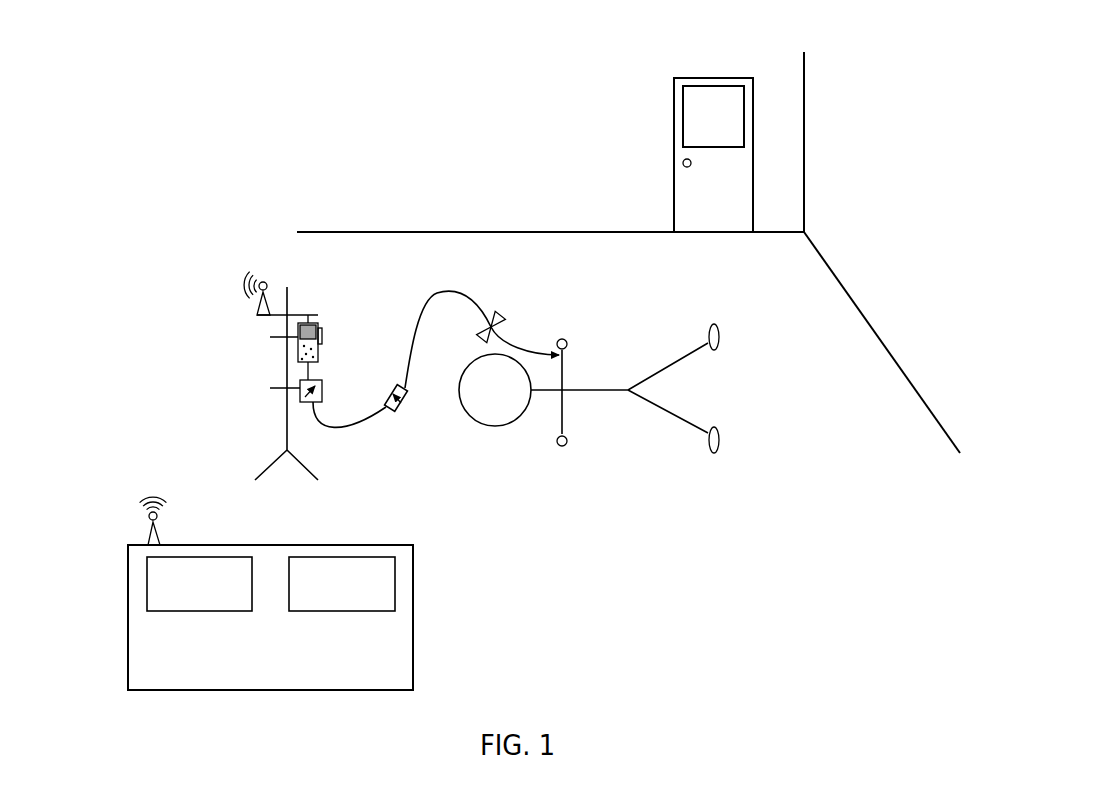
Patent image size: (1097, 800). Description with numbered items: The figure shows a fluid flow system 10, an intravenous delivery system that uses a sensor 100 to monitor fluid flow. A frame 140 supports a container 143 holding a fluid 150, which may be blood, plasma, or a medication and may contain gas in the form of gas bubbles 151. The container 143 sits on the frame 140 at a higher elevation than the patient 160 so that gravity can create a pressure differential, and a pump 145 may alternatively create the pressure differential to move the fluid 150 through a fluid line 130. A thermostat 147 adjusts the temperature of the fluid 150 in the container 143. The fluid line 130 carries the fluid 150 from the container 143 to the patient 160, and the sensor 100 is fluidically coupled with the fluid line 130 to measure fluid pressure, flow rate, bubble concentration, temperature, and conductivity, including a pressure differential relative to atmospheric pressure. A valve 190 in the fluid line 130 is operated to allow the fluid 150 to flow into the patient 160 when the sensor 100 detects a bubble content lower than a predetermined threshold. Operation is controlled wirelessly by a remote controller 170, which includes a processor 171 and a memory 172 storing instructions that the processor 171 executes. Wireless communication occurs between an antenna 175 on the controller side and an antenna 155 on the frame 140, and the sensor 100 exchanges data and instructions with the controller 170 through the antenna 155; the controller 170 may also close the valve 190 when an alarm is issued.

The fluid flow system 10 is at (137, 82).
The sensor 100 is at (402, 399).
The fluid line 130 is at (437, 293).
The frame 140 is at (287, 450).
The container 143 is at (320, 348).
The pump 145 is at (303, 393).
The thermostat 147 is at (299, 338).
The fluid 150 is at (296, 357).
The gas bubbles 151 is at (316, 323).
The antenna 155 is at (257, 313).
The patient 160 is at (515, 402).
The controller 170 is at (289, 649).
The processor 171 is at (222, 582).
The memory 172 is at (361, 582).
The antenna 175 is at (150, 530).
The valve 190 is at (503, 312).